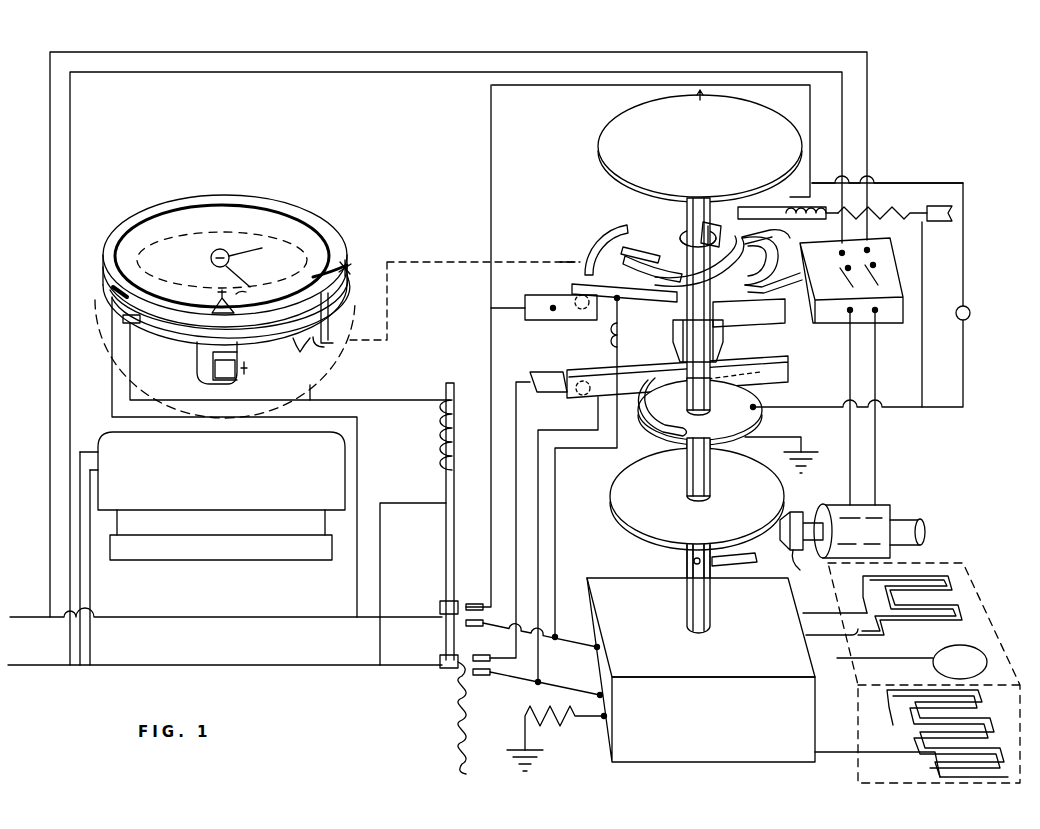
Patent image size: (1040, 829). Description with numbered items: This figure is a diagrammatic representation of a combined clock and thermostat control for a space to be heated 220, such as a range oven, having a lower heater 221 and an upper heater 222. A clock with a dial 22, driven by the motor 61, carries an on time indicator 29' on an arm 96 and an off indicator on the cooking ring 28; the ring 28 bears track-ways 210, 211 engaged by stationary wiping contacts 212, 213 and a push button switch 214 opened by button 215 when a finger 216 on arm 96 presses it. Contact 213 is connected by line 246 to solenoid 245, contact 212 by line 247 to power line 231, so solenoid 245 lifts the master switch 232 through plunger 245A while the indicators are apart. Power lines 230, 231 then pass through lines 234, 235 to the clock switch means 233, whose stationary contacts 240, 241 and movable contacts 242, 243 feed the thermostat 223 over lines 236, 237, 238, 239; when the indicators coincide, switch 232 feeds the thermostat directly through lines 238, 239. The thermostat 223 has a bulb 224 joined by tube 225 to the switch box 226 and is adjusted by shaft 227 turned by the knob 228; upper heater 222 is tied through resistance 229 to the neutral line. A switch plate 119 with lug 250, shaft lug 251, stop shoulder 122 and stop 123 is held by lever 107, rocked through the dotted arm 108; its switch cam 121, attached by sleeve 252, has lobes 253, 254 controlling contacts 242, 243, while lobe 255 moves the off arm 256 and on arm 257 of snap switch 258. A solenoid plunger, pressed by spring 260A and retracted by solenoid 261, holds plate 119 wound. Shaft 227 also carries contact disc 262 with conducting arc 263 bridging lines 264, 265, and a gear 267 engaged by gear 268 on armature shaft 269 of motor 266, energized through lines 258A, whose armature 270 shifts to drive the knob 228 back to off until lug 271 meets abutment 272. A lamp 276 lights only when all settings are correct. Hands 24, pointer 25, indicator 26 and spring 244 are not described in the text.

The dial 22 is at (300, 222).
The clock hands 24 is at (258, 247).
The pointer 25 is at (237, 282).
The indicator 26 is at (240, 292).
The cooking ring 28 is at (214, 202).
The on time indicator 29' is at (446, 293).
The motor 61 is at (248, 548).
The arm 96 is at (298, 353).
The lever 107 is at (606, 244).
The arm or lobe 108 is at (444, 262).
The switch plate 119 is at (648, 240).
The switch cam 121 is at (722, 342).
The stop shoulder 122 is at (648, 268).
The stop 123 is at (640, 300).
The track-way 210 is at (343, 272).
The track-way 211 is at (343, 288).
The wiping contact 212 is at (114, 289).
The wiping contact 213 is at (136, 324).
The push button switch 214 is at (237, 378).
The push button 215 is at (247, 368).
The finger 216 is at (330, 343).
The space to be heated 220 is at (950, 564).
The lower heater 221 is at (974, 776).
The upper heater 222 is at (950, 582).
The thermostat 223 is at (701, 653).
The bulb 224 is at (946, 668).
The tube 225 is at (862, 636).
The box 226 is at (762, 754).
The shaft 227 is at (688, 224).
The knob 228 is at (738, 112).
The resistance 229 is at (564, 722).
The power line 230 is at (36, 665).
The power line 231 is at (36, 617).
The master switch 232 is at (446, 638).
The clock switch means 233 is at (576, 341).
The line 234 is at (494, 172).
The line 235 is at (518, 432).
The line 236 is at (546, 496).
The line 237 is at (560, 535).
The line 238 is at (576, 624).
The line 239 is at (574, 688).
The stationary contact 240 is at (546, 296).
The stationary contact 241 is at (545, 368).
The movable contact 242 is at (630, 336).
The movable contact 243 is at (652, 364).
The spring 244 is at (450, 730).
The solenoid 245 is at (446, 442).
The plunger 245A is at (440, 568).
The line 246 is at (398, 392).
The line 247 is at (356, 476).
The lug 250 is at (722, 230).
The lug 251 is at (686, 240).
The sleeve 252 is at (768, 258).
The cam lobe 253 is at (722, 316).
The cam lobe 254 is at (736, 372).
The lobe 255 is at (732, 256).
The off arm 256 is at (772, 236).
The on arm 257 is at (778, 288).
The snap switch 258 is at (878, 254).
The lines 258A is at (401, 70).
The spring 260A is at (878, 214).
The solenoid 261 is at (810, 212).
The contact disc 262 is at (752, 404).
The conducting arc 263 is at (664, 430).
The line 264 is at (922, 274).
The line 265 is at (798, 440).
The motor 266 is at (880, 510).
The beveled gear or friction disc 267 is at (776, 492).
The beveled gear or friction disc 268 is at (782, 548).
The armature shaft 269 is at (804, 568).
The armature 270 is at (914, 526).
The lug 271 is at (694, 562).
The abutment 272 is at (728, 560).
The lamp 276 is at (970, 316).